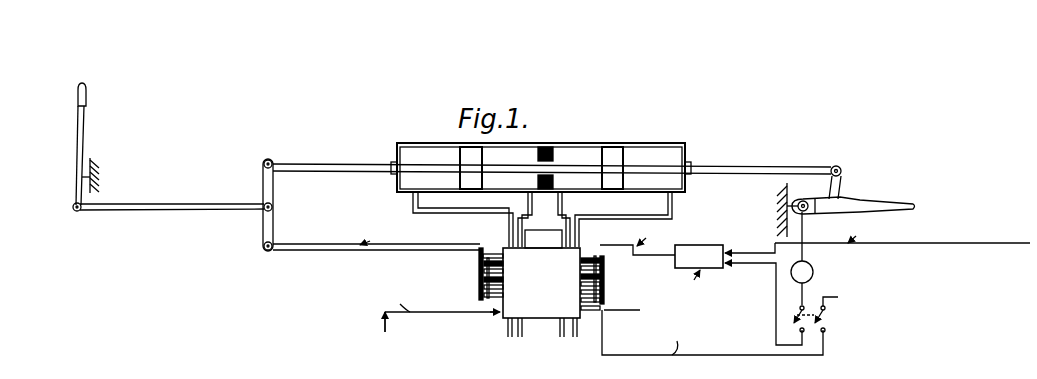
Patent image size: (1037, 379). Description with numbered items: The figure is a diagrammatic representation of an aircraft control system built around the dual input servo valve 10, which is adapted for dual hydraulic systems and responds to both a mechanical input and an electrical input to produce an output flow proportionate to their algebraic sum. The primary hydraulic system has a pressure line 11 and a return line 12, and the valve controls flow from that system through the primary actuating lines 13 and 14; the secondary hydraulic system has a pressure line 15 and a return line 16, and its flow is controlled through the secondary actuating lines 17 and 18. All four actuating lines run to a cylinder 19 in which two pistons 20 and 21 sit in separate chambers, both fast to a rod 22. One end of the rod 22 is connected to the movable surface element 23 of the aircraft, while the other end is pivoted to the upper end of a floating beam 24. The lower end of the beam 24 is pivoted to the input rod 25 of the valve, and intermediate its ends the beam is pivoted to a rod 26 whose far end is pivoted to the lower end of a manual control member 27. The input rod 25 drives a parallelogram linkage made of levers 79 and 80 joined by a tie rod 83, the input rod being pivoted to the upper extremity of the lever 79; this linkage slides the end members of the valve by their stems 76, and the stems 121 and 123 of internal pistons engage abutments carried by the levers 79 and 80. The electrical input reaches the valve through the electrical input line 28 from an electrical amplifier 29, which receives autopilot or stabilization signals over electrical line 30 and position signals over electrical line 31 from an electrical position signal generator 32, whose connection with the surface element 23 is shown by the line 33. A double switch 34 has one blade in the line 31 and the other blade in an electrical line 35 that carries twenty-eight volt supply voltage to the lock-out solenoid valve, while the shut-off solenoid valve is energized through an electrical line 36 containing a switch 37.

The dual input servo valve 10 is at (545, 320).
The primary pressure line 11 is at (562, 337).
The primary return line 12 is at (575, 337).
The primary actuating line 13 is at (563, 213).
The primary actuating line 14 is at (614, 215).
The secondary pressure line 15 is at (508, 337).
The secondary return line 16 is at (520, 337).
The secondary actuating line 17 is at (453, 213).
The secondary actuating line 18 is at (527, 206).
The cylinder 19 is at (587, 143).
The piston 20 is at (471, 168).
The piston 21 is at (612, 168).
The rod 22 is at (331, 163).
The movable surface element 23 is at (868, 200).
The floating beam 24 is at (263, 180).
The input rod 25 is at (320, 244).
The rod 26 is at (158, 204).
The manual control member 27 is at (86, 134).
The electrical input line 28 is at (607, 262).
The electrical amplifier 29 is at (653, 264).
The electrical line 30 is at (760, 253).
The electrical line 31 is at (755, 268).
The electrical position signal generator 32 is at (845, 258).
The line 33 is at (806, 228).
The double switch 34 is at (827, 320).
The electrical line 35 is at (717, 355).
The electrical line 36 is at (435, 313).
The switch 37 is at (389, 331).
The stem 76 is at (483, 271).
The lever 79 is at (480, 256).
The lever 80 is at (605, 290).
The tie rod 83 is at (480, 248).
The stem 121 is at (495, 298).
The stem 123 is at (604, 310).